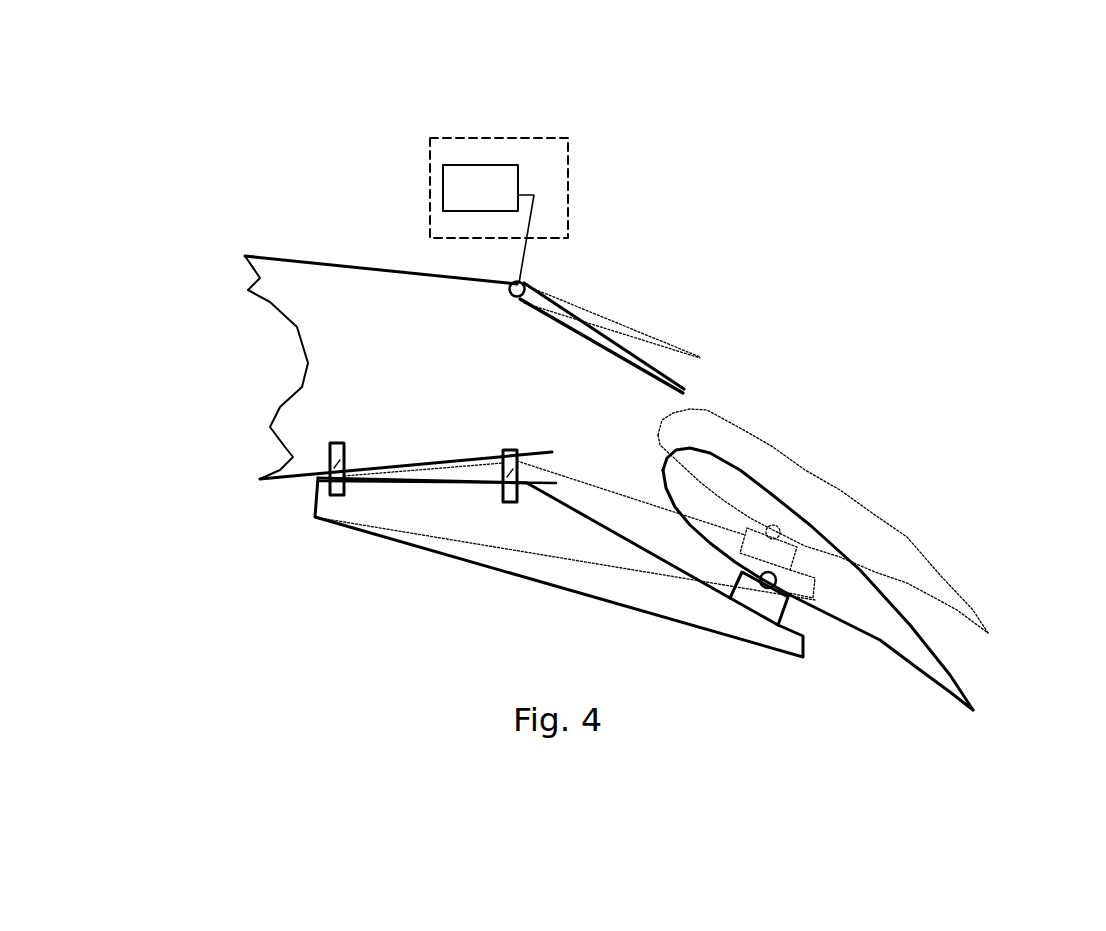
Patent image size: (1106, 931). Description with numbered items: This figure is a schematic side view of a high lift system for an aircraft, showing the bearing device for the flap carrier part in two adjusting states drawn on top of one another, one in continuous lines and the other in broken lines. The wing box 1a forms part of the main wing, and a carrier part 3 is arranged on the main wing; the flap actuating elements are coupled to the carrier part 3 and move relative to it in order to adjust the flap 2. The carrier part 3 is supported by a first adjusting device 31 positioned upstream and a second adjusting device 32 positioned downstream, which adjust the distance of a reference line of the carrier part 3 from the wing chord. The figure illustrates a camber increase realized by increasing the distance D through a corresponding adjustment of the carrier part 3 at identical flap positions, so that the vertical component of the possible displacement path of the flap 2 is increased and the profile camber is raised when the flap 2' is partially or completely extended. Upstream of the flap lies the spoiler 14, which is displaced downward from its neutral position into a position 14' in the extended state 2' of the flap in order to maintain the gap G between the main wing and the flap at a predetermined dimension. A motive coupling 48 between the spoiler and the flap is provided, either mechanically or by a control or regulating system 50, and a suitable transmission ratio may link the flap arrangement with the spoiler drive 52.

The wing box 1a is at (333, 390).
The flap 2 is at (823, 521).
The flap in extended state 2' is at (818, 593).
The carrier part 3 is at (543, 523).
The spoiler 14 is at (638, 291).
The spoiler in displaced position 14' is at (691, 304).
The first adjusting device 31 is at (327, 487).
The second adjusting device 32 is at (505, 483).
The motive coupling 48 is at (513, 171).
The control or regulating system 50 is at (513, 189).
The spoiler drive 52 is at (488, 224).
The distance D is at (550, 468).
The gap G is at (724, 396).